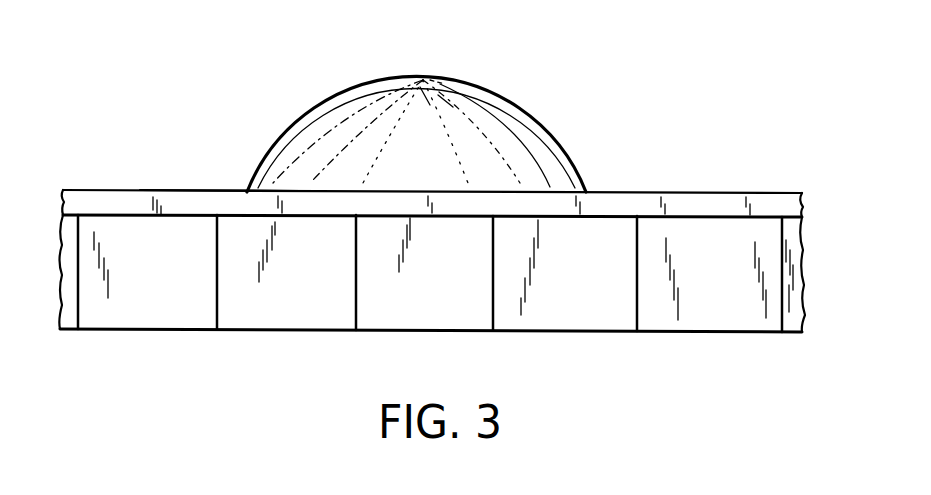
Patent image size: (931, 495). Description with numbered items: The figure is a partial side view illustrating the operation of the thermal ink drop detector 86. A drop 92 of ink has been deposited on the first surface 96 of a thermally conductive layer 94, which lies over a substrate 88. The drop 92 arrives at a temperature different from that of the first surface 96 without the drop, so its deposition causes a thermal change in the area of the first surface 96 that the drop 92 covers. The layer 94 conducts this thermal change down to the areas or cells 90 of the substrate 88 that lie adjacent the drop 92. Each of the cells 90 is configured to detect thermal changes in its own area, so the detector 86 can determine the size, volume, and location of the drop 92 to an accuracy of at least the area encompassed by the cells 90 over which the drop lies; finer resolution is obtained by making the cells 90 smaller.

The thermal ink drop detector 86 is at (624, 163).
The substrate 88 is at (815, 229).
The cells 90 is at (157, 288).
The drop 92 is at (405, 92).
The thermally conductive layer 94 is at (137, 202).
The first surface 96 is at (225, 190).